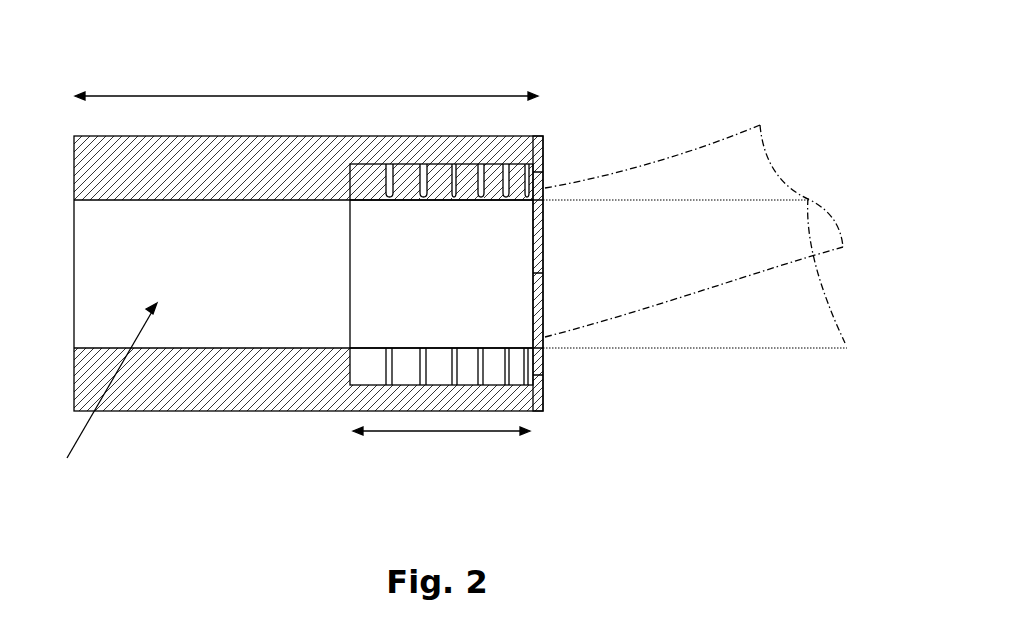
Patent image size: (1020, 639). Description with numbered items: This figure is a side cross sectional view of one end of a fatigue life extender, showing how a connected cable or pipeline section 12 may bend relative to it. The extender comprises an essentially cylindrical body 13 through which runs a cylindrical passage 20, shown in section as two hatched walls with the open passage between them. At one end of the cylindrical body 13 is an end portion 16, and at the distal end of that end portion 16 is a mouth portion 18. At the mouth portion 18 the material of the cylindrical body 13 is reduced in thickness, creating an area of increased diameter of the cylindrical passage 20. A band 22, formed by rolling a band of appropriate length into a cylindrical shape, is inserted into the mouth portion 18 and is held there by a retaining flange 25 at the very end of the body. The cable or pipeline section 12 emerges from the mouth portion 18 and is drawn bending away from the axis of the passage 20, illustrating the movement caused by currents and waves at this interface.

The first cable or pipeline section 12 is at (736, 320).
The cylindrical body 13 is at (197, 393).
The end portion 16 is at (168, 96).
The mouth portion 18 is at (450, 431).
The cylindrical passage 20 is at (101, 396).
The band 22 is at (365, 373).
The retaining flange 25 is at (540, 392).